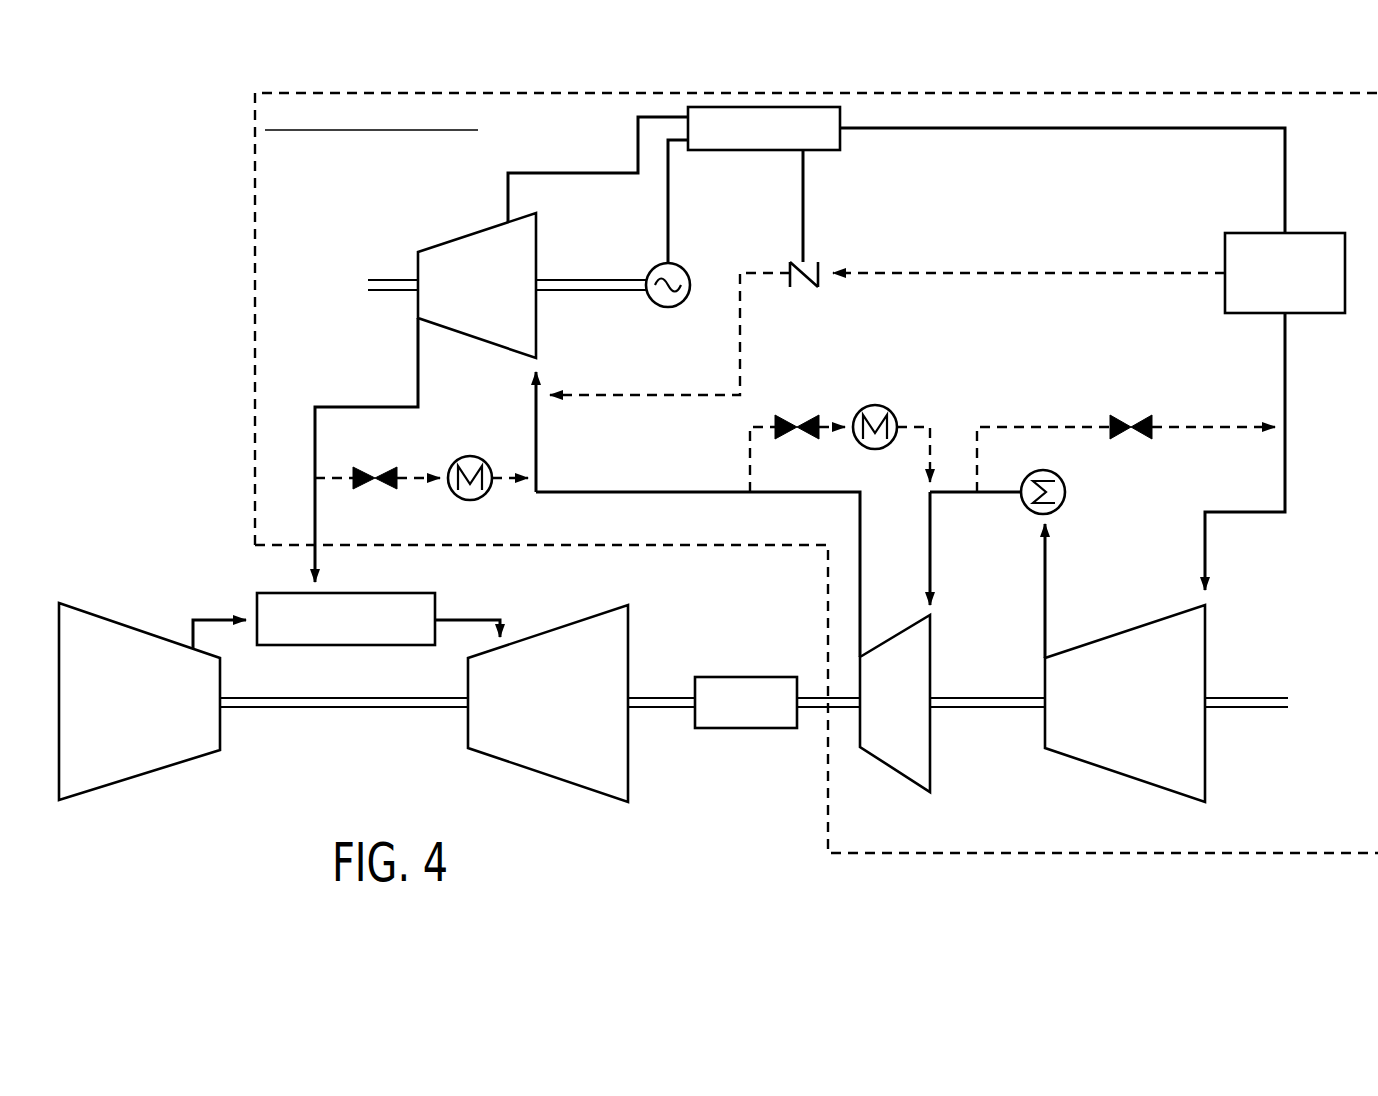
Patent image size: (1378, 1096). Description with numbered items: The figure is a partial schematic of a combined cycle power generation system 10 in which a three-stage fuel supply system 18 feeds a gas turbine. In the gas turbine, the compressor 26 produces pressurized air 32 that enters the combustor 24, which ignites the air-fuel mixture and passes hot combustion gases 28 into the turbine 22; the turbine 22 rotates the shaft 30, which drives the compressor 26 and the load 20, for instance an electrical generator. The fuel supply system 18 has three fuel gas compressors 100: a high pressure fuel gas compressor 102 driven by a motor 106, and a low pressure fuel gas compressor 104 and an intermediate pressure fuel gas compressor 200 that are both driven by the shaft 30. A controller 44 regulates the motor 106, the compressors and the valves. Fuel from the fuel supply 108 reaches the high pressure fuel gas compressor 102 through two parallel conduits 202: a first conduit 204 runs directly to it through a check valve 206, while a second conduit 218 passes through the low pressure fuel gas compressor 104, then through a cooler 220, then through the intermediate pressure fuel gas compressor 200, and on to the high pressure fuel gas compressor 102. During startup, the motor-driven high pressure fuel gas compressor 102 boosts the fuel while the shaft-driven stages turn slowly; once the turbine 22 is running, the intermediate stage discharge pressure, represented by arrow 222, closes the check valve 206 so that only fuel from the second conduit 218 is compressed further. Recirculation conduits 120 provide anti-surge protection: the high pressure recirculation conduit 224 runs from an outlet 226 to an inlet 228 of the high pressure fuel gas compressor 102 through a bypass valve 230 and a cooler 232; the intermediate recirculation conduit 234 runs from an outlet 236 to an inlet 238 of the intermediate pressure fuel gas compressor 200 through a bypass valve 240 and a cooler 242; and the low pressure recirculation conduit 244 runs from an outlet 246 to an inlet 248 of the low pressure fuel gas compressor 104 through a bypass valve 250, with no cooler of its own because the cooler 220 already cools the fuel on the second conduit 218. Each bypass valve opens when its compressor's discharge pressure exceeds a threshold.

The combined cycle power generation system 10 is at (118, 364).
The fuel supply system 18 is at (254, 322).
The first load 20 is at (750, 677).
The turbine 22 is at (548, 777).
The combustor 24 is at (378, 593).
The compressor 26 is at (138, 777).
The combustion gases 28 is at (468, 620).
The shaft 30 is at (343, 708).
The pressurized air 32 is at (215, 620).
The controller 44 is at (765, 152).
The fuel gas compressors 100 is at (410, 214).
The high pressure fuel gas compressor 102 is at (478, 232).
The low pressure fuel gas compressor 104 is at (1122, 778).
The motor 106 is at (679, 267).
The fuel supply 108 is at (1310, 233).
The recirculation conduits 120 is at (500, 466).
The intermediate pressure fuel gas compressor 200 is at (915, 782).
The conduits 202 is at (1040, 244).
The first conduit 204 is at (1165, 272).
The check valve 206 is at (827, 261).
The second conduit 218 is at (660, 494).
The cooler 220 is at (1065, 489).
The discharge pressure 222 is at (598, 419).
The high pressure fuel gas compressor recirculation conduit 224 is at (334, 483).
The outlet 226 is at (388, 379).
The inlet 228 is at (527, 390).
The bypass valve 230 is at (362, 470).
The cooler 232 is at (470, 500).
The intermediate pressure fuel gas compressor recirculation conduit 234 is at (900, 420).
The outlet 236 is at (873, 532).
The inlet 238 is at (953, 518).
The bypass valve 240 is at (785, 440).
The cooler 242 is at (866, 410).
The low pressure fuel gas compressor recirculation conduit 244 is at (1185, 427).
The outlet 246 is at (1072, 617).
The inlet 248 is at (1224, 567).
The bypass valve 250 is at (1120, 418).